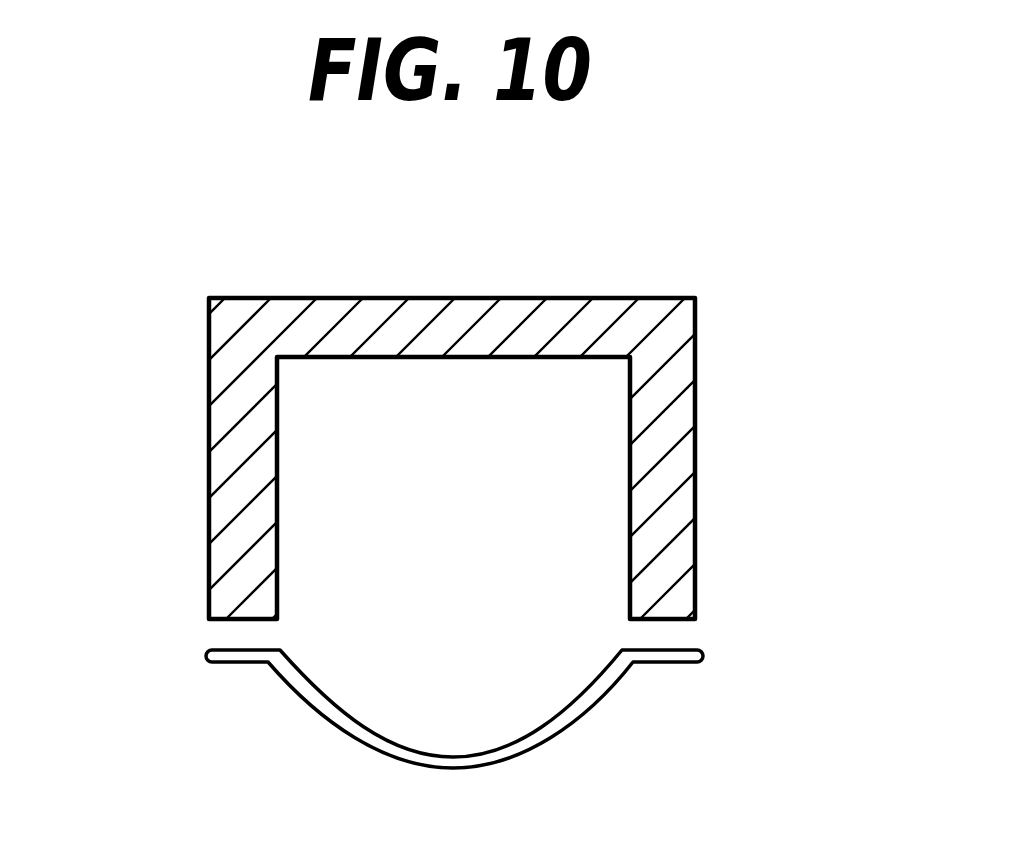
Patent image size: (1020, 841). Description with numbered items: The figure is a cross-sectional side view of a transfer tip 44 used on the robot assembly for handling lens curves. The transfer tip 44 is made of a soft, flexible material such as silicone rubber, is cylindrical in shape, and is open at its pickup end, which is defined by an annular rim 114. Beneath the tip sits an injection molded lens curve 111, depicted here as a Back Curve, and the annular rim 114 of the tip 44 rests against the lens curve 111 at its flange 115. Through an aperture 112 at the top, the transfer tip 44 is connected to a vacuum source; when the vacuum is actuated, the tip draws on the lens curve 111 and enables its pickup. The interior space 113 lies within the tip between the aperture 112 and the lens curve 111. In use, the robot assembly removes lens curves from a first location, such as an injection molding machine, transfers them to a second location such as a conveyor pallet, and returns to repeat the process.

The transfer tip 44 is at (697, 308).
The lens curve 111 is at (583, 720).
The aperture 112 is at (428, 270).
The interior cavity 113 is at (397, 485).
The annular rim 114 is at (217, 621).
The flange 115 is at (228, 650).